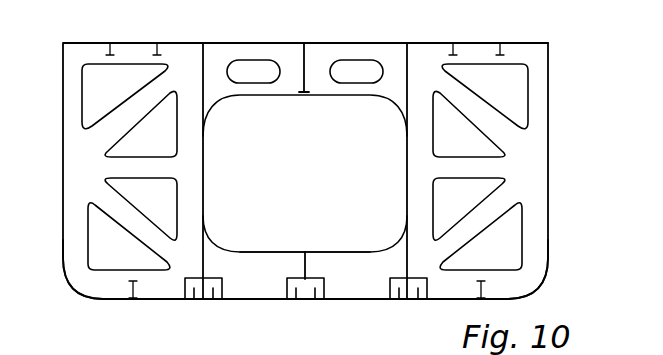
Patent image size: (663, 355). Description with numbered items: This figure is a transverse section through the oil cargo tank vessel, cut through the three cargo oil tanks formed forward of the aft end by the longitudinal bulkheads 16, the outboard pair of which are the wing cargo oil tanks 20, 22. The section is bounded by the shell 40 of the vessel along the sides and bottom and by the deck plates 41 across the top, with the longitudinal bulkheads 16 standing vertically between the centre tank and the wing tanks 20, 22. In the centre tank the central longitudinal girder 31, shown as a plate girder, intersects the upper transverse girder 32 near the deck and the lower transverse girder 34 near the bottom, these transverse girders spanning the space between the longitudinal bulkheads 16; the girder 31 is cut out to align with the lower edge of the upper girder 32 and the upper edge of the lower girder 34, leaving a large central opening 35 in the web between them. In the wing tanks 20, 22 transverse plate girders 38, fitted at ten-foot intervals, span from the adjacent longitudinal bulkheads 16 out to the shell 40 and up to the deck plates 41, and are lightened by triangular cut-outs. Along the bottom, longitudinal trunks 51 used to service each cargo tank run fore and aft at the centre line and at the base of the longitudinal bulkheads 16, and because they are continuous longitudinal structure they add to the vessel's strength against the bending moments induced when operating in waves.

The longitudinal bulkheads 16 is at (205, 160).
The cargo oil tank 20 is at (105, 256).
The cargo oil tank 22 is at (510, 251).
The central longitudinal girder 31 is at (306, 84).
The upper transverse girder 32 is at (283, 89).
The lower transverse girder 34 is at (256, 268).
The central opening 35 is at (214, 112).
The transverse plate girders 38 is at (87, 163).
The shell 40 is at (259, 300).
The deck plates 41 is at (429, 44).
The longitudinal trunks 51 is at (194, 301).